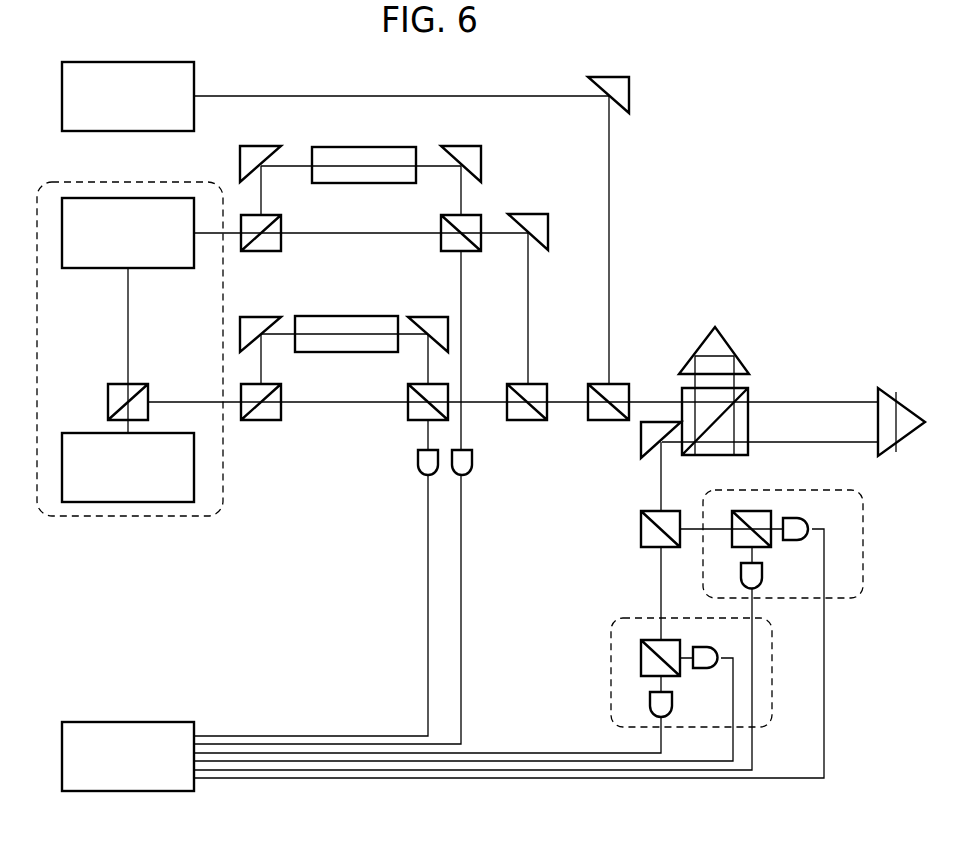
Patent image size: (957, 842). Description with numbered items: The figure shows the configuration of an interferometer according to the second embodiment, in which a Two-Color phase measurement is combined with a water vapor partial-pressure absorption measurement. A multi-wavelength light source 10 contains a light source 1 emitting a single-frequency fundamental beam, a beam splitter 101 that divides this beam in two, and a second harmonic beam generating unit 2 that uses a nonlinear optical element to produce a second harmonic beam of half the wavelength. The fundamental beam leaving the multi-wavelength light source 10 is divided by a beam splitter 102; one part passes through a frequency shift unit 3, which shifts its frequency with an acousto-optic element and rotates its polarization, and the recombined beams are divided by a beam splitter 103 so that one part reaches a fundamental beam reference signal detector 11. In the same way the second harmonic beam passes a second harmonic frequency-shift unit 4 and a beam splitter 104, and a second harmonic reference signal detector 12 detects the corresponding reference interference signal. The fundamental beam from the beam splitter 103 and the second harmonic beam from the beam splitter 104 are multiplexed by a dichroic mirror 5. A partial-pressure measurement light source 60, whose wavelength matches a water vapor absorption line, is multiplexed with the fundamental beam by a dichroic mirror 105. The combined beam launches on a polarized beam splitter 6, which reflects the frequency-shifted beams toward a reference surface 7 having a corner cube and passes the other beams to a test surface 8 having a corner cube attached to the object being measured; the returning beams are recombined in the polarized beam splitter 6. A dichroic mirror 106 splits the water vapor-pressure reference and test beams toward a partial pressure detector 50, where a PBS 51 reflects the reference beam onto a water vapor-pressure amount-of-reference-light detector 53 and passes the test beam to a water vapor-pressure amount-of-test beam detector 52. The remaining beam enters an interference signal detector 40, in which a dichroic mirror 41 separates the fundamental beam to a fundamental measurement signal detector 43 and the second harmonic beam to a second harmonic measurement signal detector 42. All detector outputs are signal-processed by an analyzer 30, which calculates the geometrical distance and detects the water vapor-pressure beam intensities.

The light source 1 is at (77, 433).
The second harmonic beam generating unit 2 is at (162, 268).
The frequency shift unit 3 is at (330, 335).
The second harmonic frequency-shift unit 4 is at (363, 165).
The dichroic mirror 5 is at (538, 383).
The polarized beam splitter 6 is at (743, 387).
The reference surface 7 is at (727, 333).
The test surface 8 is at (905, 400).
The multi-wavelength light source 10 is at (145, 178).
The fundamental beam reference signal detector 11 is at (425, 477).
The second harmonic reference signal detector 12 is at (467, 477).
The analyzer 30 is at (99, 722).
The interference signal detector 40 is at (612, 633).
The dichroic mirror 41 is at (657, 640).
The second harmonic measurement signal detector 42 is at (715, 647).
The fundamental measurement signal detector 43 is at (650, 697).
The partial pressure detector 50 is at (748, 488).
The PBS 51 is at (760, 510).
The water vapor-pressure amount-of-test beam detector 52 is at (803, 518).
The water vapor-pressure amount-of-reference-light detector 53 is at (762, 573).
The partial-pressure measurement light source 60 is at (194, 77).
The beam splitter 101 is at (115, 383).
The beam splitter 102 is at (280, 405).
The beam splitter 103 is at (415, 407).
The beam splitter 104 is at (475, 210).
The dichroic mirror 105 is at (603, 421).
The dichroic mirror 106 is at (639, 530).